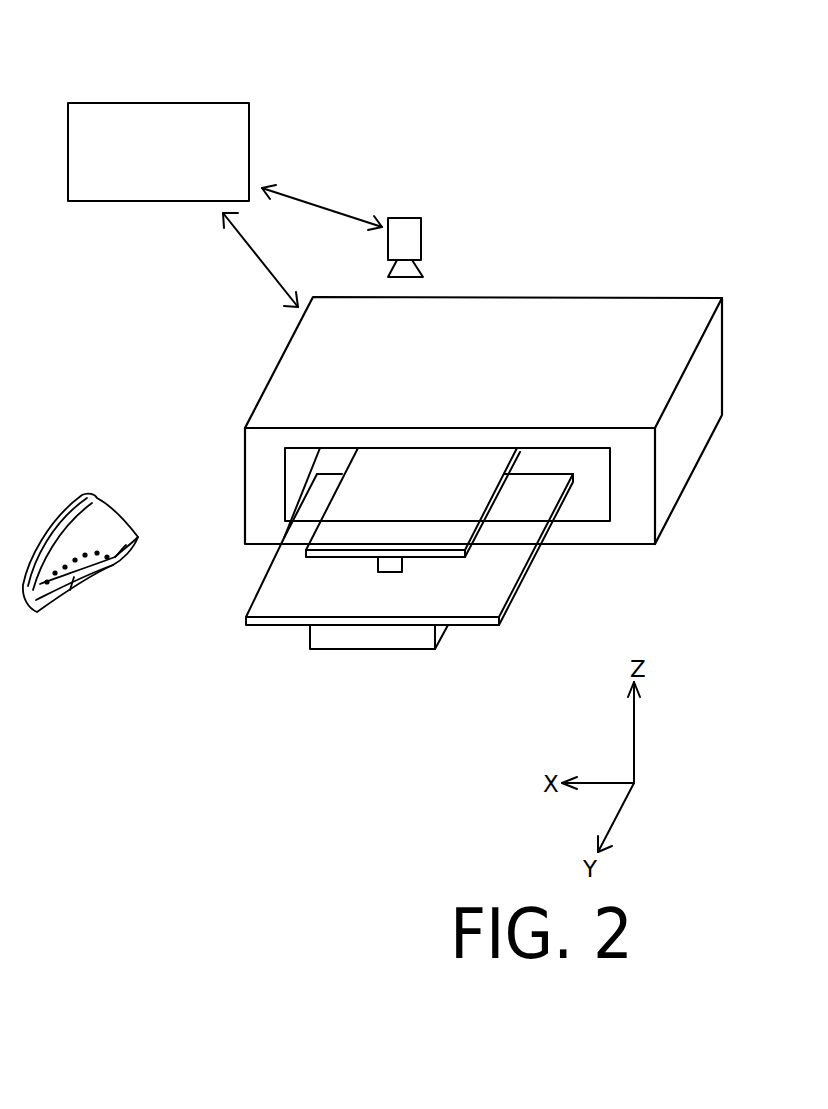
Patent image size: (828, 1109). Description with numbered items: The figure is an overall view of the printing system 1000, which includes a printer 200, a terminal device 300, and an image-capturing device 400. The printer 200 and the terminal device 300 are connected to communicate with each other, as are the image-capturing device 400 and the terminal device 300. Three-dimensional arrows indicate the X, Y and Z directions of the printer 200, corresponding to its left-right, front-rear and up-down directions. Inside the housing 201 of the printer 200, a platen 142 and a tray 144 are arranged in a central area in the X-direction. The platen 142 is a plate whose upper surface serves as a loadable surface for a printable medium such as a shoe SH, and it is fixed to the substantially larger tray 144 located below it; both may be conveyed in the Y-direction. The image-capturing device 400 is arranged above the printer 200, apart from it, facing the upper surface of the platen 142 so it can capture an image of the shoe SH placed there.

The printing system 1000 is at (443, 42).
The printer 200 is at (613, 290).
The housing 201 is at (302, 342).
The terminal device 300 is at (167, 103).
The image-capturing device 400 is at (404, 221).
The platen 142 is at (473, 532).
The tray 144 is at (268, 622).
The shoe SH is at (105, 508).